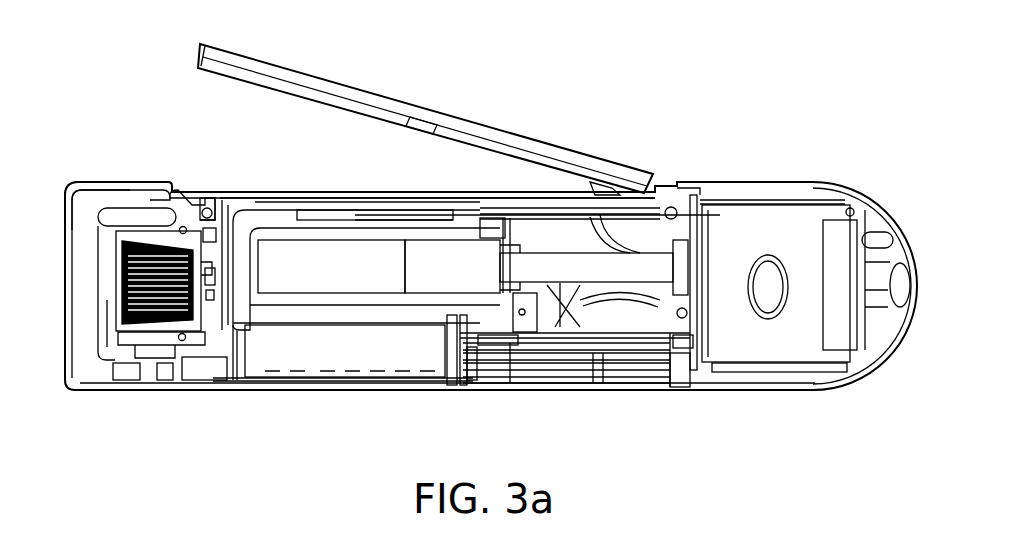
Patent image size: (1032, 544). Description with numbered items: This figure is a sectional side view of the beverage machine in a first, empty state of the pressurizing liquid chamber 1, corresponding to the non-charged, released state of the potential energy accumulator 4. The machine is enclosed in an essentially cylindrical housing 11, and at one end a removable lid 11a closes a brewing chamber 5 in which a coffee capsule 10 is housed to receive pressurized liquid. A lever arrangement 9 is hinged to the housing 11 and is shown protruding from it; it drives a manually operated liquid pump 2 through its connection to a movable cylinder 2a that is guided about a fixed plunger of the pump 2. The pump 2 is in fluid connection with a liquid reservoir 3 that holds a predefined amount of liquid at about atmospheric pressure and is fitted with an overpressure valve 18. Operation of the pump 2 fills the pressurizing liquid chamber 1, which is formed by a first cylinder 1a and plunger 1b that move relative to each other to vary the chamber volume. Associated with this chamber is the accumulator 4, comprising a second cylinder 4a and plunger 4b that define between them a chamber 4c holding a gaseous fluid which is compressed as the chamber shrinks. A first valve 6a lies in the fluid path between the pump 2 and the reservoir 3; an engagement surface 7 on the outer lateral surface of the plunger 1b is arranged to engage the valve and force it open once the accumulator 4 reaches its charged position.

The pressurizing liquid chamber 1 is at (250, 230).
The first cylinder 1a is at (366, 191).
The plunger 1b is at (258, 312).
The liquid pump 2 is at (670, 399).
The movable cylinder 2a is at (467, 381).
The liquid reservoir 3 is at (778, 286).
The potential energy accumulator 4 is at (382, 298).
The second cylinder 4a is at (398, 236).
The second plunger 4b is at (452, 266).
The chamber 4c is at (331, 266).
The brewing chamber 5 is at (152, 236).
The first valve 6a is at (447, 360).
The engagement surface 7 is at (318, 318).
The lever arrangement 9 is at (262, 63).
The coffee capsule 10 is at (120, 279).
The housing 11 is at (193, 393).
The lid 11a is at (80, 181).
The overpressure valve 18 is at (880, 232).